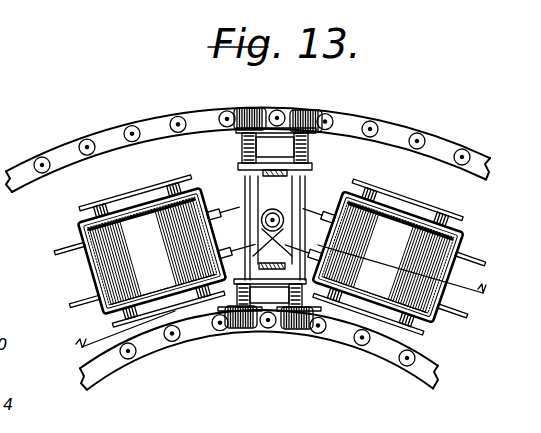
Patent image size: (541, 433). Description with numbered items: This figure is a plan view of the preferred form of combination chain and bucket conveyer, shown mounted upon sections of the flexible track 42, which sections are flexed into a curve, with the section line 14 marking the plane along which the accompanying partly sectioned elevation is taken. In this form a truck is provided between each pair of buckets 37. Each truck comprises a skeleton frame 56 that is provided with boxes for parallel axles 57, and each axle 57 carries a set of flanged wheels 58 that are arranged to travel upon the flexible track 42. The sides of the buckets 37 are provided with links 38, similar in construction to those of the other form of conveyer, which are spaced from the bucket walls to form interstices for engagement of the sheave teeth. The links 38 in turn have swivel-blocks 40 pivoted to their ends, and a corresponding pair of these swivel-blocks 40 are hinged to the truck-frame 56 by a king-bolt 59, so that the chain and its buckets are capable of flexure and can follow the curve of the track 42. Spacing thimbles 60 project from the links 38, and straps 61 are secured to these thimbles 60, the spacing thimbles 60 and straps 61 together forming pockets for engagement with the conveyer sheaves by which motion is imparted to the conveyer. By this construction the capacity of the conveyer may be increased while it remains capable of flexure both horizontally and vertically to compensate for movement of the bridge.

The section line 14— 14 is at (282, 299).
The bucket 37 is at (270, 255).
The link 38 is at (78, 222).
The swivel-block 40 is at (243, 236).
The flexible rail 42 is at (162, 125).
The skeleton frame 56 is at (292, 193).
The axle 57 is at (244, 190).
The flanged wheel 58 is at (302, 116).
The king-bolt 59 is at (270, 207).
The spacing thimble 60 is at (119, 207).
The strap 61 is at (147, 191).